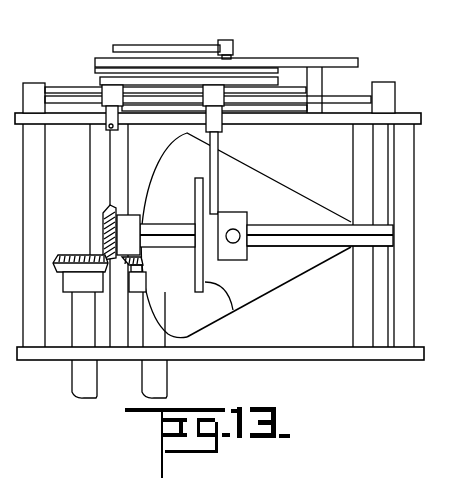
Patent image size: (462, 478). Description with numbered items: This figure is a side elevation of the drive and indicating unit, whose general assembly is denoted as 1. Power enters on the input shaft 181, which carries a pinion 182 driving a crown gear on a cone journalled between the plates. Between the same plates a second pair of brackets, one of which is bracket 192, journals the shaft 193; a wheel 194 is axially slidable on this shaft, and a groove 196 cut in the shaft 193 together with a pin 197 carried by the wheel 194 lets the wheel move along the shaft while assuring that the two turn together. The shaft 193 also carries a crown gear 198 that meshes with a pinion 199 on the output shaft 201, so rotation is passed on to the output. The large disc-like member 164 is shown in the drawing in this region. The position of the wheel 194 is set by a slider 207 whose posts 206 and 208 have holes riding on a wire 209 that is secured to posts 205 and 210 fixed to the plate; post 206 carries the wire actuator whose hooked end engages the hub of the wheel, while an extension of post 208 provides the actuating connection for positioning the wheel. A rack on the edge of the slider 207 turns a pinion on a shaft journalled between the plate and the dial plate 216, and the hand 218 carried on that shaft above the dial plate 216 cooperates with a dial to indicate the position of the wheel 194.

The machine frame 1 is at (25, 158).
The cam disk 164 is at (243, 174).
The input shaft 181 is at (167, 378).
The pinion 182 is at (137, 283).
The bracket 192 is at (404, 340).
The shaft 193 is at (323, 244).
The wheel 194 is at (238, 310).
The groove 196 is at (303, 237).
The pin 197 is at (249, 223).
The crown gear 198 is at (102, 215).
The pinion 199 is at (82, 233).
The output shaft 201 is at (72, 382).
The post 205 is at (30, 83).
The post 206 is at (236, 83).
The slider 207 is at (172, 77).
The post 208 is at (101, 88).
The wire 209 is at (353, 97).
The post 210 is at (383, 82).
The dial plate 216 is at (314, 58).
The hand 218 is at (158, 44).